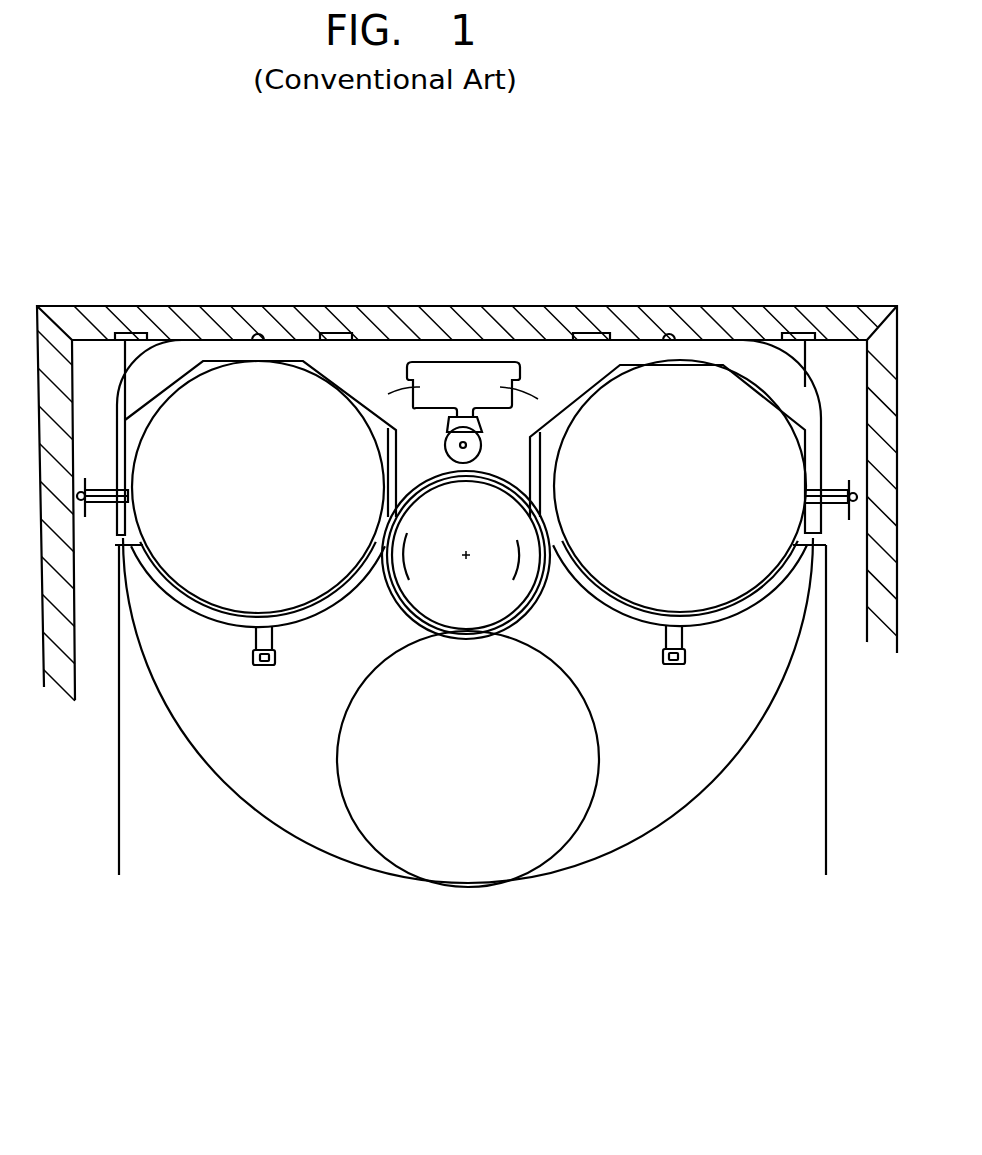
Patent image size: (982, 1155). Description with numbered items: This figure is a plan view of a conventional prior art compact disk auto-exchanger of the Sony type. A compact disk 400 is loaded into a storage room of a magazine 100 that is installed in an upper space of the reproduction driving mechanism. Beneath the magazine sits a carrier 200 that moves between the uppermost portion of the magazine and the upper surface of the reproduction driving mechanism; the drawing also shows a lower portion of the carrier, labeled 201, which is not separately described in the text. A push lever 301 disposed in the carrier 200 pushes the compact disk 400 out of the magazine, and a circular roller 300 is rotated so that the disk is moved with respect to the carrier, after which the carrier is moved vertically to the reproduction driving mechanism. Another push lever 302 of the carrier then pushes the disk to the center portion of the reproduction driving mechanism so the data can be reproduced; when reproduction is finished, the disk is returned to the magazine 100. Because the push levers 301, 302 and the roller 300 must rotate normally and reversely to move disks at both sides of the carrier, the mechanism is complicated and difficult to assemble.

The magazine 100 is at (160, 370).
The carrier 200 is at (335, 820).
The container bottom wall 201 is at (252, 812).
The circular roller 300 is at (466, 555).
The push lever 301 is at (465, 375).
The push lever 302 is at (253, 648).
The compact disk 400 is at (262, 500).